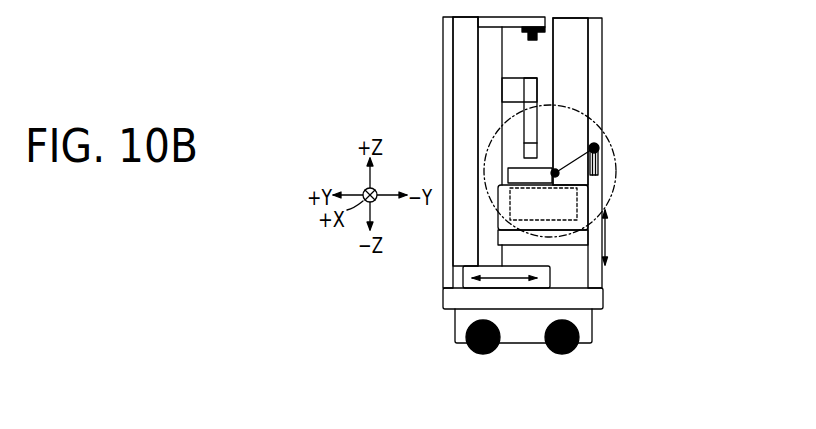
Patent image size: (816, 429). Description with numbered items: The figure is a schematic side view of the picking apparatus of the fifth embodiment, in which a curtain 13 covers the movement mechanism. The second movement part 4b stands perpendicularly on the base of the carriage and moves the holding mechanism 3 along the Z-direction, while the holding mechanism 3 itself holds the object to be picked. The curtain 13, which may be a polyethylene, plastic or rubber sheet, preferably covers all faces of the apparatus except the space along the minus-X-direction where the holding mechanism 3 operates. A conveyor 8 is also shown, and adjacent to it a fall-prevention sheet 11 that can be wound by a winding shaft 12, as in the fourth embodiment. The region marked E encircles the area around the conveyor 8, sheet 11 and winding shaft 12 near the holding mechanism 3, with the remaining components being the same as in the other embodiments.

The second movement part 4b is at (487, 72).
The curtain 13 is at (463, 88).
The holding mechanism 3 is at (506, 125).
The conveyor 8 is at (527, 175).
The sheet 11 is at (562, 172).
The winding shaft 12 is at (595, 147).
The region E is at (603, 119).